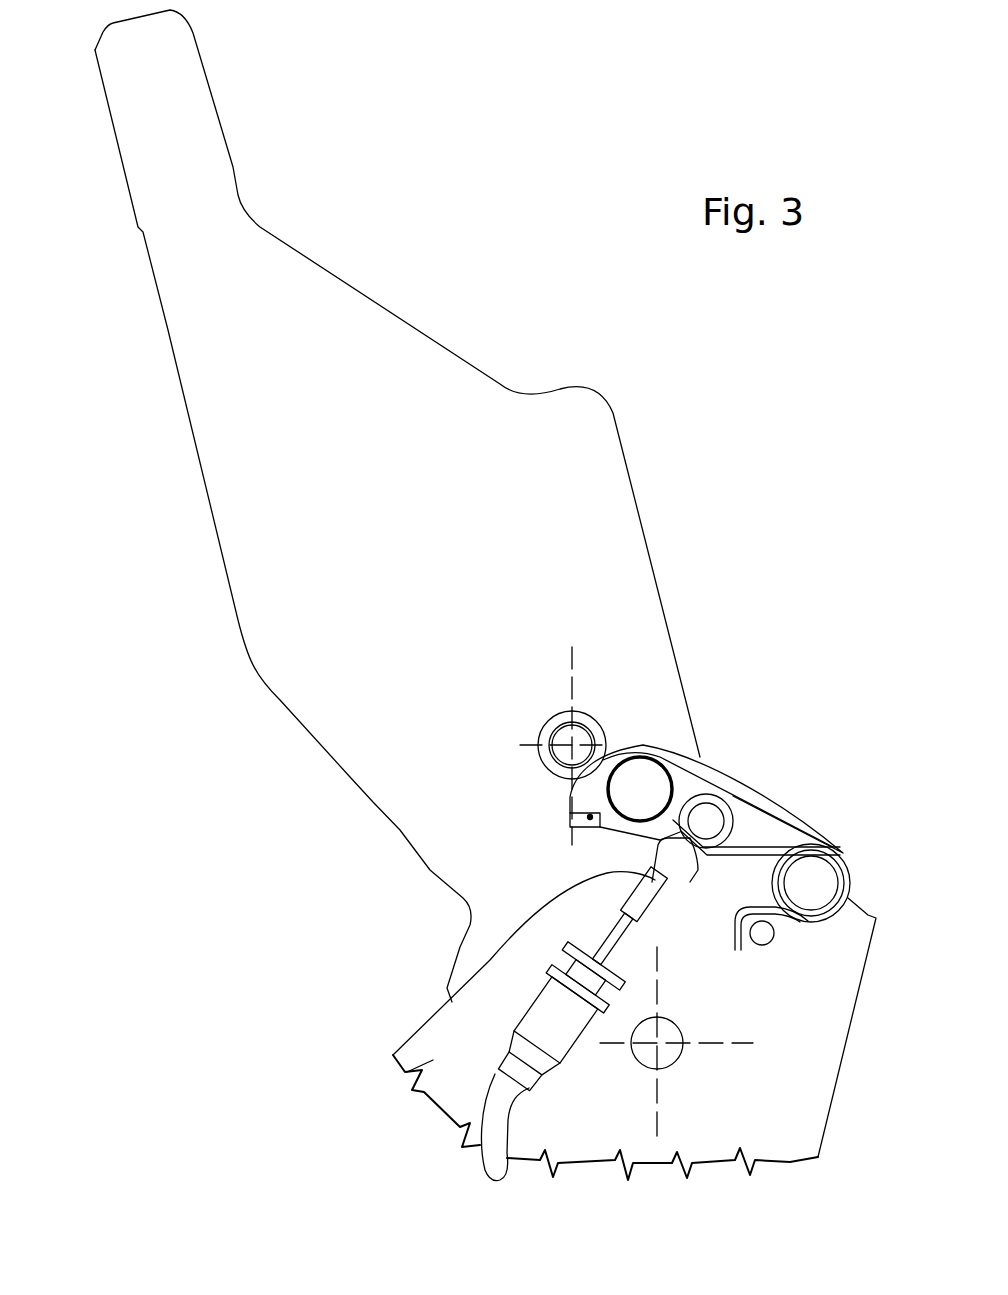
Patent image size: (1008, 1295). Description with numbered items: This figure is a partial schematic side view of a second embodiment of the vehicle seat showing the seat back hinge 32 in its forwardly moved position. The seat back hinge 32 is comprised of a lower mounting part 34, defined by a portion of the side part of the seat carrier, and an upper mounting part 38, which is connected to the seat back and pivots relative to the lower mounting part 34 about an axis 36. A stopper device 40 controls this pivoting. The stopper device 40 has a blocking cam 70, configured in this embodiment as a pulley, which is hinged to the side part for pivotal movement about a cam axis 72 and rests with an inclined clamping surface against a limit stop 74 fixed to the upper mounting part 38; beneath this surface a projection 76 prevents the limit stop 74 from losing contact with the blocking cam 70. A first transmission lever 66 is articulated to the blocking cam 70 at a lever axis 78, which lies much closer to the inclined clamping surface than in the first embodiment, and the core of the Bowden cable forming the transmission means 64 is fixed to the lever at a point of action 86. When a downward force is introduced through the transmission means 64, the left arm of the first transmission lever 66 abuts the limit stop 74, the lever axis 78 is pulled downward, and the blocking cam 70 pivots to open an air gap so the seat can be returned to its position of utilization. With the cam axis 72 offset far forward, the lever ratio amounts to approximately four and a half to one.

The seat back hinge 32 is at (372, 942).
The lower mounting part 34 is at (403, 1070).
The axis 36 is at (660, 1045).
The upper mounting part 38 is at (293, 497).
The stopper device 40 is at (784, 616).
The transmission means 64 is at (463, 1142).
The first transmission lever 66 is at (687, 783).
The blocking cam 70 is at (770, 812).
The cam axis 72 is at (640, 789).
The limit stop 74 is at (590, 733).
The projection 76 is at (590, 817).
The lever axis 78 is at (807, 883).
The point of action 86 is at (712, 822).